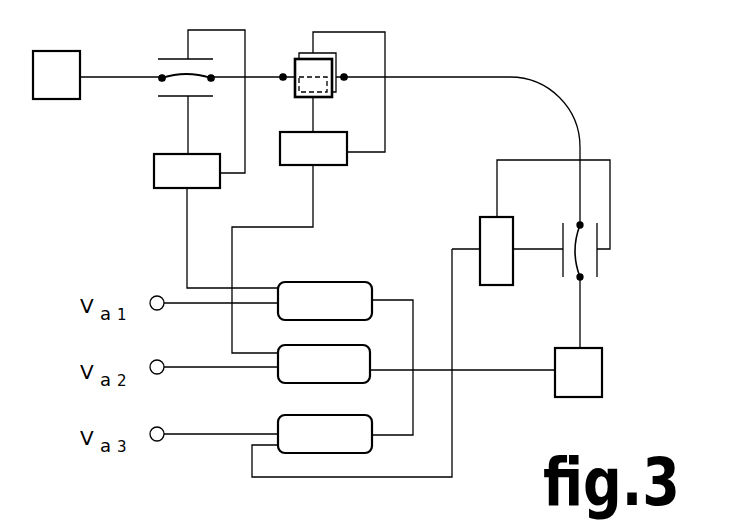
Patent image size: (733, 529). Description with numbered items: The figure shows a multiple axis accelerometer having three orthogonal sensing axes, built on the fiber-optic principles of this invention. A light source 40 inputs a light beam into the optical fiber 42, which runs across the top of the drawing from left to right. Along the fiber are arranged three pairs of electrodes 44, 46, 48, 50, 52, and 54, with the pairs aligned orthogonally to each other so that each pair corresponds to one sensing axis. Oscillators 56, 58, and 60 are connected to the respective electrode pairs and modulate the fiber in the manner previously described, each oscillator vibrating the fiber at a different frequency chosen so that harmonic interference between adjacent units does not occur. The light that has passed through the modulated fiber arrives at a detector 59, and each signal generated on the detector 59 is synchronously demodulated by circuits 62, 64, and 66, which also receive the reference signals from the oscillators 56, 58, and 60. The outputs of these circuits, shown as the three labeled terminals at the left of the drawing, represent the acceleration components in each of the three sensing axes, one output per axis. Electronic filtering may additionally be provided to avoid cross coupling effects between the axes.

The light source 40 is at (63, 52).
The optical fiber 42 is at (123, 75).
The electrode 44 is at (165, 59).
The electrode 46 is at (163, 97).
The electrode 48 is at (323, 98).
The electrode 50 is at (308, 53).
The electrode 52 is at (562, 265).
The electrode 54 is at (600, 263).
The oscillator 56 is at (154, 173).
The oscillator 58 is at (350, 167).
The detector 59 is at (603, 372).
The oscillator 60 is at (509, 222).
The synchronous demodulation circuit 62 is at (372, 281).
The synchronous demodulation circuit 64 is at (368, 358).
The synchronous demodulation circuit 66 is at (368, 440).